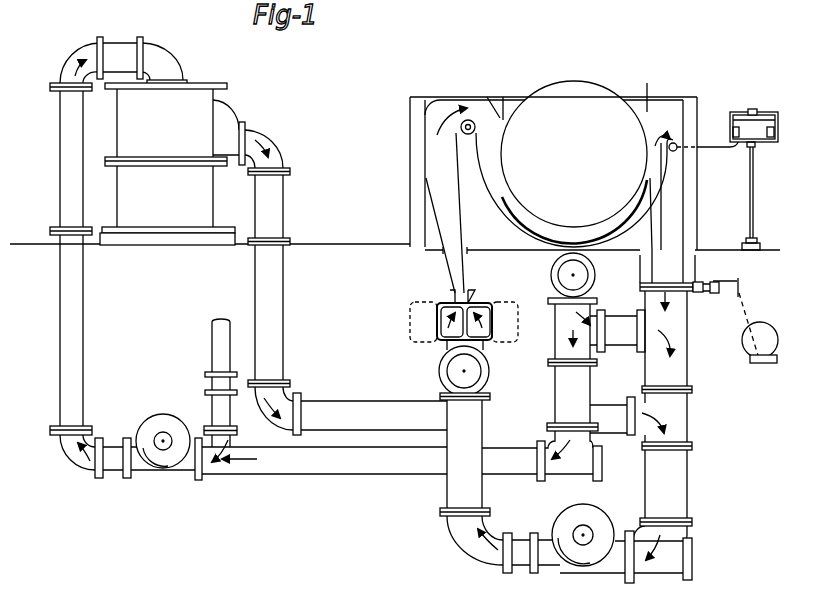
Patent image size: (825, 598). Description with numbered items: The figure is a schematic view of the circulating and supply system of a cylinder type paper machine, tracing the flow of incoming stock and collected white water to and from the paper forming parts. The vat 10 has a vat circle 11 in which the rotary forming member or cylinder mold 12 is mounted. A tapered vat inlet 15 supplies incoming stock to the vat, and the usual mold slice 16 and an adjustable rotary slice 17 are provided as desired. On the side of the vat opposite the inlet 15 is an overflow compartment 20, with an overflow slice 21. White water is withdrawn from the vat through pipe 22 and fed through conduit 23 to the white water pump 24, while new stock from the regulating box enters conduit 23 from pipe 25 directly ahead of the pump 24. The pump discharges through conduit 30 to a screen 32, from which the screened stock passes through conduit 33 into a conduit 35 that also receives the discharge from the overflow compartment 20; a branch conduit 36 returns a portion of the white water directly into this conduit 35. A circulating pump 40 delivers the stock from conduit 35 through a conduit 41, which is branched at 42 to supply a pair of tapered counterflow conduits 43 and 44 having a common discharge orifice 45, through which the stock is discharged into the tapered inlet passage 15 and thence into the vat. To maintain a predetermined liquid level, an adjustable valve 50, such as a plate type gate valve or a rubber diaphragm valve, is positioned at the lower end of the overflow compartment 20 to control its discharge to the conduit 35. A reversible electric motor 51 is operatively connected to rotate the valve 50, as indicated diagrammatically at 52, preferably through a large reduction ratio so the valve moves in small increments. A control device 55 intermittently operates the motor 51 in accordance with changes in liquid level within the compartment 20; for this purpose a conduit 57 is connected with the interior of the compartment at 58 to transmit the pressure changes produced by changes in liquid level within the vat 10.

The vat 10 is at (462, 77).
The vat circle 11 is at (512, 217).
The cylinder mold 12 is at (590, 88).
The tapered vat inlet 15 is at (437, 186).
The mold slice 16 is at (500, 97).
The adjustable rotary slice 17 is at (478, 130).
The overflow compartment 20 is at (673, 188).
The overflow slice 21 is at (652, 88).
The pipe 22 is at (563, 272).
The conduit 23 is at (556, 376).
The white water pump 24 is at (157, 423).
The pipe 25 is at (220, 337).
The conduit 30 is at (66, 279).
The screen 32 is at (190, 100).
The conduit 33 is at (288, 212).
The conduit 35 is at (675, 370).
The branch conduit 36 is at (623, 338).
The circulating pump 40 is at (572, 517).
The conduit 41 is at (453, 496).
The branch 42 is at (458, 370).
The tapered counterflow conduit 43 is at (440, 305).
The tapered counterflow conduit 44 is at (483, 332).
The common discharge orifice 45 is at (452, 273).
The adjustable valve 50 is at (673, 283).
The reversible electric motor 51 is at (760, 363).
The drive connection 52 is at (735, 313).
The control device 55 is at (752, 109).
The conduit 57 is at (710, 146).
The connection 58 is at (678, 142).